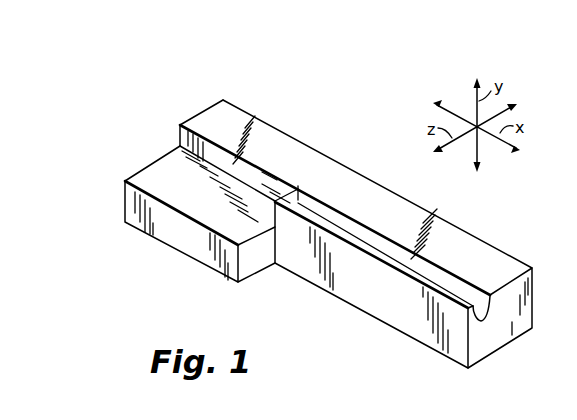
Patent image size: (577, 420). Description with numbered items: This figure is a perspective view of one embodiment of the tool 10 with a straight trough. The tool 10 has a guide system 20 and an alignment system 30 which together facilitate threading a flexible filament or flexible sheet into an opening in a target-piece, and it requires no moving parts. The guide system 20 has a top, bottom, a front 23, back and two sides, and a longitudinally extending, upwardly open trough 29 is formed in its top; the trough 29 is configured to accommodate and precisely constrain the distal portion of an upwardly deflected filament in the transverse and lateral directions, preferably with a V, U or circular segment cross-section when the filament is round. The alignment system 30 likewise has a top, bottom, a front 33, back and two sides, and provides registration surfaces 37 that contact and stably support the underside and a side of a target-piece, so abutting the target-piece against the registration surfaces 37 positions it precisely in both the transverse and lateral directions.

The tool 10 is at (150, 106).
The guide system 20 is at (228, 316).
The front 23 is at (356, 302).
The trough 29 is at (479, 302).
The alignment system 30 is at (228, 316).
The front 33 is at (133, 213).
The registration surfaces 37 is at (180, 147).